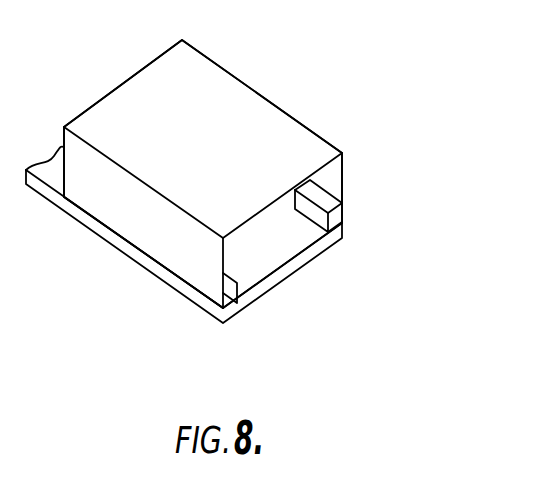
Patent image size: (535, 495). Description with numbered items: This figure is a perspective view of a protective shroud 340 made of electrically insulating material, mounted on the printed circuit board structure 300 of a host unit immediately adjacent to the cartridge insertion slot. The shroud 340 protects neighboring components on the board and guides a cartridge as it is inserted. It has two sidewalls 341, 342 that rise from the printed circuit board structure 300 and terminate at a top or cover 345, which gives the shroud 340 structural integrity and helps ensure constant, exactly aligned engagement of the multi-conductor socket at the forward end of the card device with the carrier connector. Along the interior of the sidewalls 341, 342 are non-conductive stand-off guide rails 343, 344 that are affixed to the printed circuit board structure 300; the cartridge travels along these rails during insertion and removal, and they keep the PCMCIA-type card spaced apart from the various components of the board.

The printed circuit board structure 300 is at (304, 257).
The protective shroud 340 is at (209, 57).
The sidewall 341 is at (142, 235).
The sidewall 342 is at (344, 173).
The stand-off guide rail 343 is at (231, 297).
The stand-off guide rail 344 is at (334, 221).
The top or cover 345 is at (260, 104).